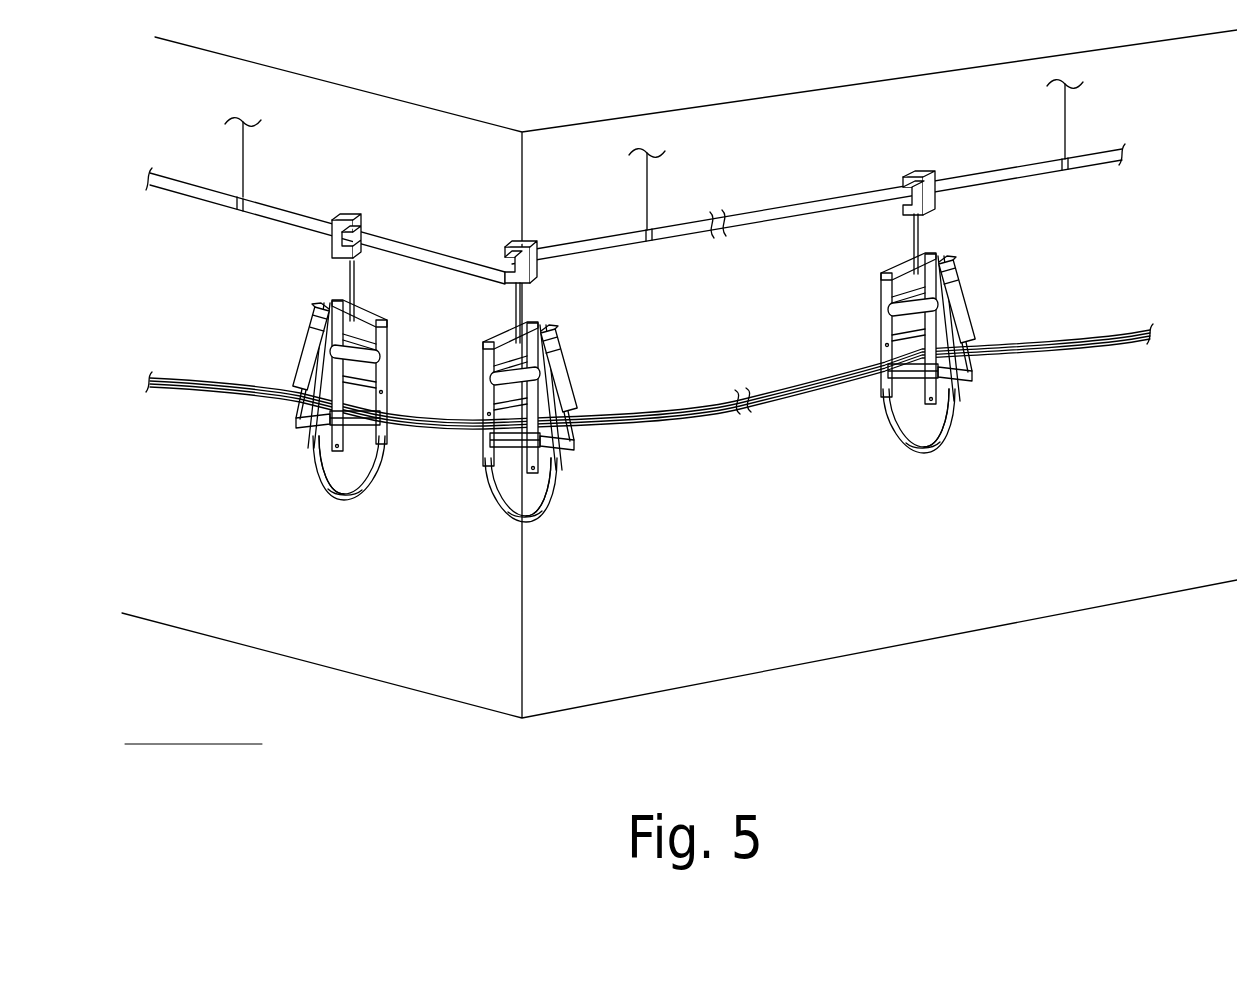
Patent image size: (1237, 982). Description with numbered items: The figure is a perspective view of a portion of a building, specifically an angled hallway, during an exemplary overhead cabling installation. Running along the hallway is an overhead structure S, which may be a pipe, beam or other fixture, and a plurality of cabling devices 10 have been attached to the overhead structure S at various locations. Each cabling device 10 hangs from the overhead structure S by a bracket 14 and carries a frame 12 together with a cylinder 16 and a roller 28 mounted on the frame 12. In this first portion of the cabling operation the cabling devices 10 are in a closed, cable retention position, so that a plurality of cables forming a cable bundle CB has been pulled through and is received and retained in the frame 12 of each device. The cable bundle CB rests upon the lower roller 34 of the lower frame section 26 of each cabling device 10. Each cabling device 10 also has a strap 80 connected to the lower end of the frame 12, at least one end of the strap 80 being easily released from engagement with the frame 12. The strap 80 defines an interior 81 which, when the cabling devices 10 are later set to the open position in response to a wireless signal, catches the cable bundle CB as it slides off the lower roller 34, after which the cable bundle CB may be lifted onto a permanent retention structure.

The cabling device 10 is at (639, 393).
The frame 12 is at (391, 310).
The strut bracket 14 is at (338, 216).
The pneumatic cylinder 16 is at (290, 333).
The lower frame section 26 is at (328, 466).
The roller 28 is at (376, 374).
The lower roller 34 is at (352, 420).
The strap 80 is at (383, 474).
The interior 81 is at (345, 490).
The overhead structure S is at (215, 183).
The cable bundle CB is at (200, 378).